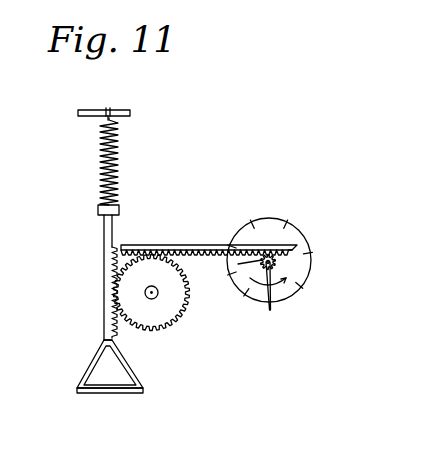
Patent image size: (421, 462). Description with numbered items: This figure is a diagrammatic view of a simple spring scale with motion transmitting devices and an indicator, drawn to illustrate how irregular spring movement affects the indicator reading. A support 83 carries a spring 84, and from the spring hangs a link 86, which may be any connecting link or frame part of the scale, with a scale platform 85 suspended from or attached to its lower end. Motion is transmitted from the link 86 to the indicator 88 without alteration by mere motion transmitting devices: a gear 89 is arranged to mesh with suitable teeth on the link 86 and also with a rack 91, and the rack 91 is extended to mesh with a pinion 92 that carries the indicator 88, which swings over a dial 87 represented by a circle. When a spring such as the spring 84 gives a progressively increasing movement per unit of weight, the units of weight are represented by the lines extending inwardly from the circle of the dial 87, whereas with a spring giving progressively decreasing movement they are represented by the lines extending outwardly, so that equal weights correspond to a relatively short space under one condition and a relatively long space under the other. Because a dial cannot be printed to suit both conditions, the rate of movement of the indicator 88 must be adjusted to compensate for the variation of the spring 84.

The support 83 is at (122, 110).
The spring 84 is at (118, 166).
The scale platform 85 is at (114, 393).
The link 86 is at (104, 303).
The dial 87 is at (308, 284).
The indicator 88 is at (274, 267).
The gear 89 is at (165, 331).
The rack 91 is at (161, 245).
The pinion 92 is at (238, 264).